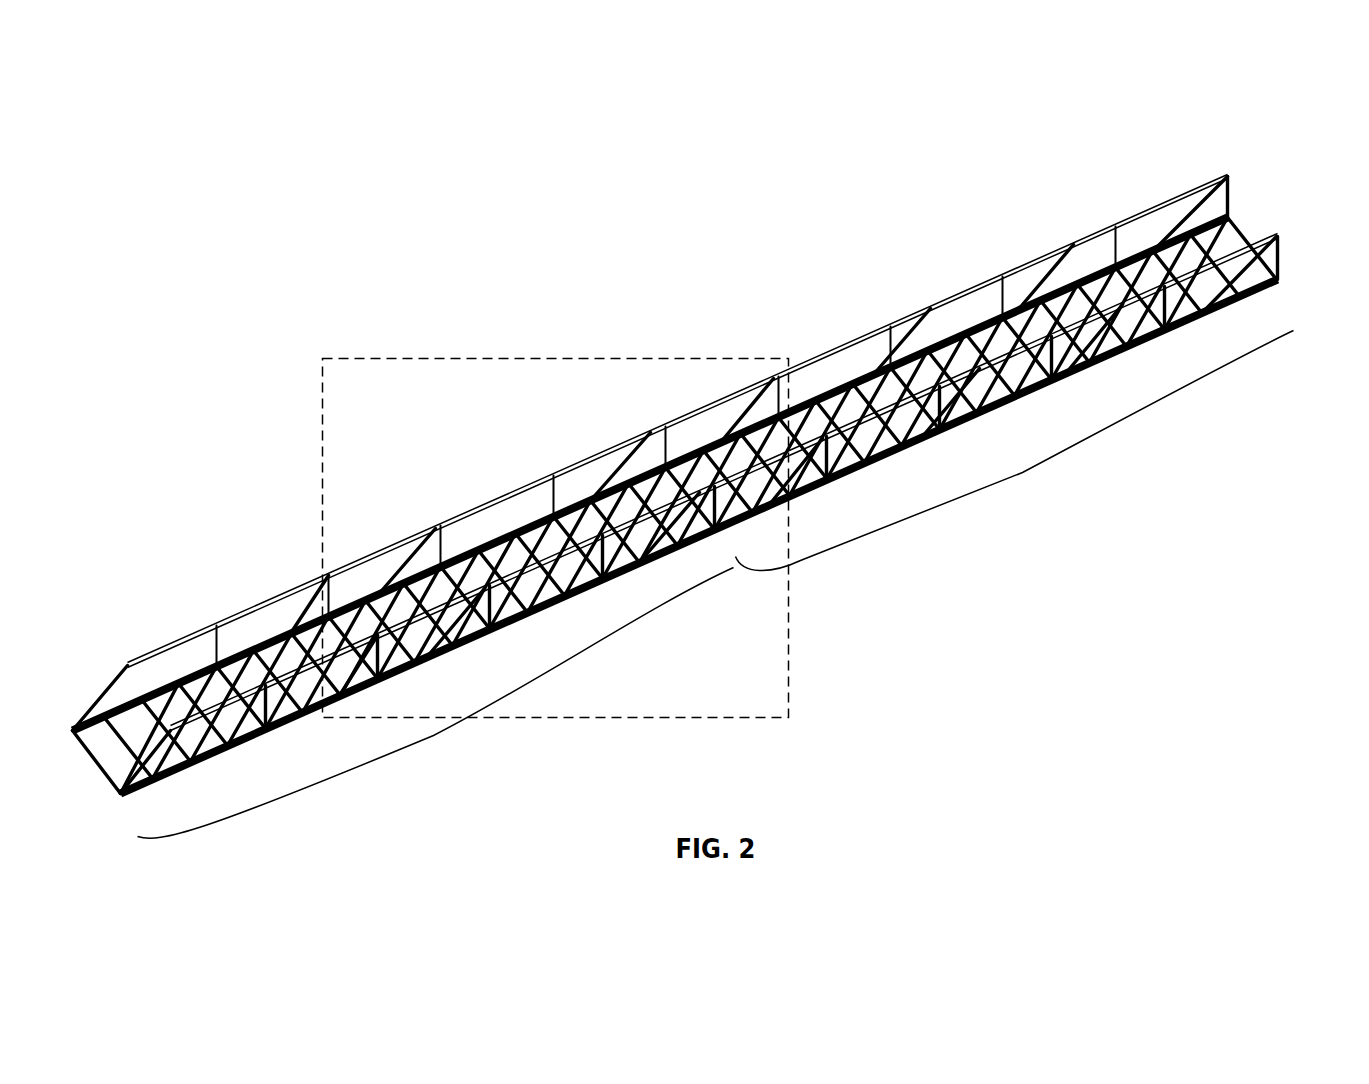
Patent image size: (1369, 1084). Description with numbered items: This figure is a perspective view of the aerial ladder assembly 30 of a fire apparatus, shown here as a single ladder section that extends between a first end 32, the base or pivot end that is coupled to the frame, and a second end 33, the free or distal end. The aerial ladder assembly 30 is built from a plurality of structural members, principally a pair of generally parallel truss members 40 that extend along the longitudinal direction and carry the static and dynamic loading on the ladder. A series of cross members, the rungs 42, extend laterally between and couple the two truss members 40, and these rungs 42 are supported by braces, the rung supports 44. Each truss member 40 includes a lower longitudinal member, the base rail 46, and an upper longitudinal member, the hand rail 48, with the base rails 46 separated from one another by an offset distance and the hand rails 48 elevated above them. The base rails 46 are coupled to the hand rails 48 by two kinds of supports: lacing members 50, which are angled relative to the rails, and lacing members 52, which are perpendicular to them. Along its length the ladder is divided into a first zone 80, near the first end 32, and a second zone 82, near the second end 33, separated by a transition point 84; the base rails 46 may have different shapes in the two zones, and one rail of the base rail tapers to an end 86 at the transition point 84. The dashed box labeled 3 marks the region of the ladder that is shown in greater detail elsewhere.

The detail area of FIG. 3 is at (321, 395).
The aerial ladder assembly 30 is at (445, 422).
The first end 32 is at (106, 809).
The second end 33 is at (1298, 315).
The truss members 40 is at (1228, 180).
The rungs 42 is at (1229, 223).
The rung supports 44 is at (1100, 290).
The base rail 46 is at (243, 650).
The hand rail 48 is at (980, 323).
The lacing members 50 is at (770, 384).
The lacing members 52 is at (573, 482).
The first zone 80 is at (436, 703).
The second zone 82 is at (1015, 451).
The transition point 84 is at (740, 565).
The end 86 is at (713, 532).